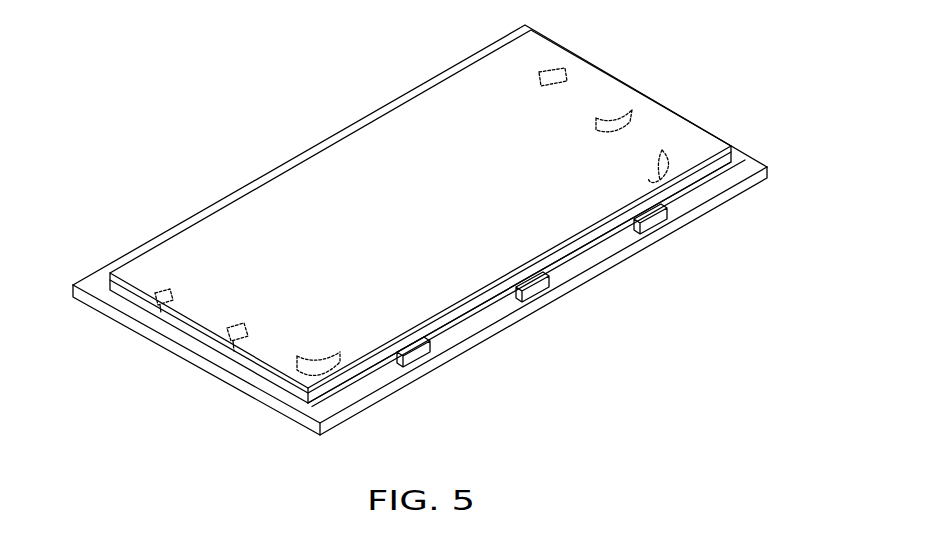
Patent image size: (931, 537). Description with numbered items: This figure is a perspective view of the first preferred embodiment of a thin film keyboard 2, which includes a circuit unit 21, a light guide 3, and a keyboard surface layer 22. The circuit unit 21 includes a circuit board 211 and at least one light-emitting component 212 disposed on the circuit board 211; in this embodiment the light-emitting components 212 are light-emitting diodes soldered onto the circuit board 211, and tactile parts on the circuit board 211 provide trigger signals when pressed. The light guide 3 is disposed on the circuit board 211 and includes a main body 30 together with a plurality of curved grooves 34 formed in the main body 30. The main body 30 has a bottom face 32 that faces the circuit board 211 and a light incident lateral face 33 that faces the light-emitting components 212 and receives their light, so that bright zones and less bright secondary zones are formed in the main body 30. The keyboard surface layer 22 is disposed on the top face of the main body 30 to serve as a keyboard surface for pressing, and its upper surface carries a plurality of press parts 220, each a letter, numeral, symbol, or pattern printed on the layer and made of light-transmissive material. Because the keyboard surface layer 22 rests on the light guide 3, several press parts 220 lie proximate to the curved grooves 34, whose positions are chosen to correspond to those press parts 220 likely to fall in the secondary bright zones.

The thin film keyboard 2 is at (441, 218).
The circuit unit 21 is at (454, 245).
The circuit board 211 is at (751, 169).
The light-emitting component 212 is at (418, 357).
The keyboard surface layer 22 is at (407, 209).
The press parts 220 is at (510, 103).
The light guide 3 is at (418, 237).
The main body 30 is at (295, 393).
The bottom face 32 is at (483, 307).
The light incident lateral face 33 is at (585, 238).
The curved grooves 34 is at (152, 295).